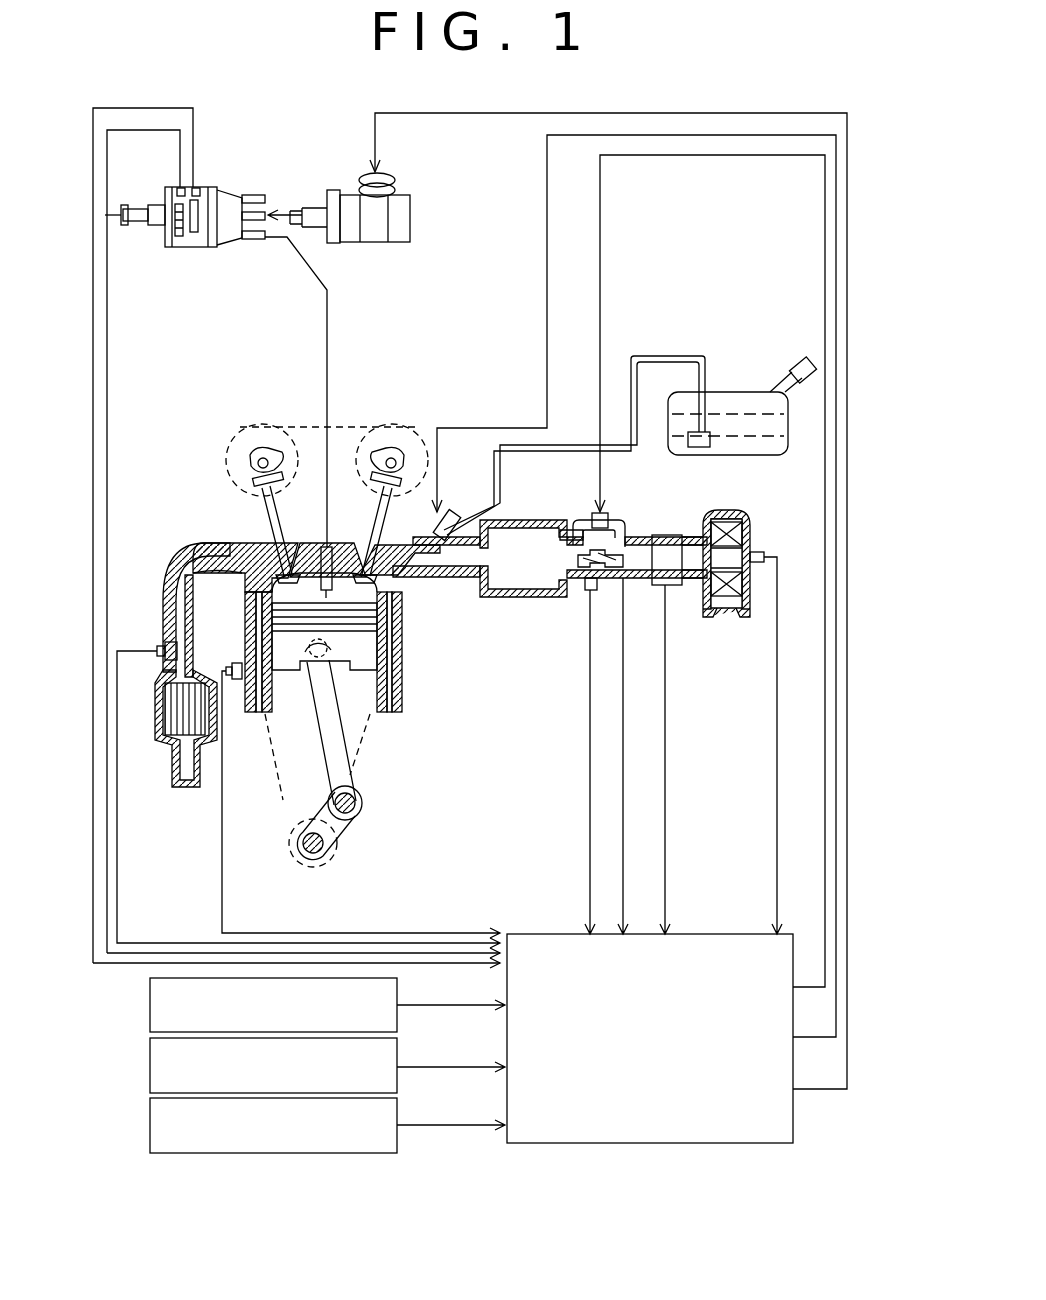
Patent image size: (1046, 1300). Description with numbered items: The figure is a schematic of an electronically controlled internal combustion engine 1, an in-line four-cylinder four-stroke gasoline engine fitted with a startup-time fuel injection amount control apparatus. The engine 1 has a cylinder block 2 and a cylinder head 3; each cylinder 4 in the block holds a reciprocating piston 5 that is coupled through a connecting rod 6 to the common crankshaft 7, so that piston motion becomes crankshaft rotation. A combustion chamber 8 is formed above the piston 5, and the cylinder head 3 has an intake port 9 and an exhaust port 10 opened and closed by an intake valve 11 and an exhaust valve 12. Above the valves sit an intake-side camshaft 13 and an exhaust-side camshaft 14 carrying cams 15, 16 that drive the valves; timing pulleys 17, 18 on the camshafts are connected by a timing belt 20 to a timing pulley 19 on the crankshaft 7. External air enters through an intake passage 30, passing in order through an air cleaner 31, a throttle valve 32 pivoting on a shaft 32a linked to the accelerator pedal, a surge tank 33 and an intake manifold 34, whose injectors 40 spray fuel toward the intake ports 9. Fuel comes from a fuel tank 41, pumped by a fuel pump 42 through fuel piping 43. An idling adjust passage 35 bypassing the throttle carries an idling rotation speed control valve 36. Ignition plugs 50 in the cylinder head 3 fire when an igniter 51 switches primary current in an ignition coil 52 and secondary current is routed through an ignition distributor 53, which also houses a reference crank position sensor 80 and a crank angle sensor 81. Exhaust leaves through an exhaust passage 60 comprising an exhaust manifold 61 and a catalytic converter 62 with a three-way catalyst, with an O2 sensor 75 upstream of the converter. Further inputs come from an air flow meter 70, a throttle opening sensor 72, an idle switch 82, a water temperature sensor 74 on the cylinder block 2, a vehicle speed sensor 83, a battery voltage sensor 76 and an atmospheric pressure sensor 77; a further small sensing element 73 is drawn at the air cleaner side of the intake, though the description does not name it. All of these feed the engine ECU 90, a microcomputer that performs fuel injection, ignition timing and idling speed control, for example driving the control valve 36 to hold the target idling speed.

The internal combustion engine 1 is at (427, 674).
The cylinder block 2 is at (405, 703).
The cylinder head 3 is at (246, 546).
The cylinder 4 is at (362, 718).
The piston 5 is at (365, 645).
The connecting rod 6 is at (352, 786).
The crankshaft 7 is at (325, 852).
The combustion chamber 8 is at (300, 646).
The intake port 9 is at (405, 588).
The exhaust port 10 is at (229, 578).
The intake valve 11 is at (368, 552).
The exhaust valve 12 is at (265, 512).
The intake-side camshaft 13 is at (398, 454).
The exhaust-side camshaft 14 is at (256, 462).
The cam 15 is at (391, 448).
The cam 16 is at (258, 446).
The timing pulley 17 is at (358, 470).
The timing pulley 18 is at (296, 470).
The timing pulley 19 is at (306, 806).
The timing belt 20 is at (278, 772).
The intake passage 30 is at (583, 592).
The air cleaner 31 is at (706, 514).
The throttle valve 32 is at (560, 591).
The shaft 32a is at (580, 560).
The surge tank 33 is at (497, 598).
The intake manifold 34 is at (456, 580).
The idling adjust passage 35 is at (607, 513).
The idling rotation speed control valve 36 is at (588, 520).
The injector 40 is at (455, 512).
The fuel tank 41 is at (758, 456).
The fuel pump 42 is at (702, 433).
The fuel piping 43 is at (672, 360).
The ignition plug 50 is at (323, 548).
The igniter 51 is at (395, 174).
The ignition coil 52 is at (348, 192).
The ignition distributor 53 is at (236, 192).
The exhaust passage 60 is at (161, 622).
The exhaust manifold 61 is at (192, 568).
The catalytic converter 62 is at (158, 730).
The air flow meter 70 is at (676, 587).
The throttle opening sensor 72 is at (631, 536).
The air flow sensor 73 is at (762, 552).
The water temperature sensor 74 is at (238, 680).
The O2 sensor 75 is at (166, 645).
The battery voltage sensor 76 is at (150, 1006).
The atmospheric pressure sensor 77 is at (150, 1067).
The reference crank position sensor 80 is at (197, 188).
The crank angle sensor 81 is at (179, 188).
The idle switch 82 is at (589, 595).
The vehicle speed sensor 83 is at (150, 1127).
The engine electronic control unit 90 is at (714, 933).